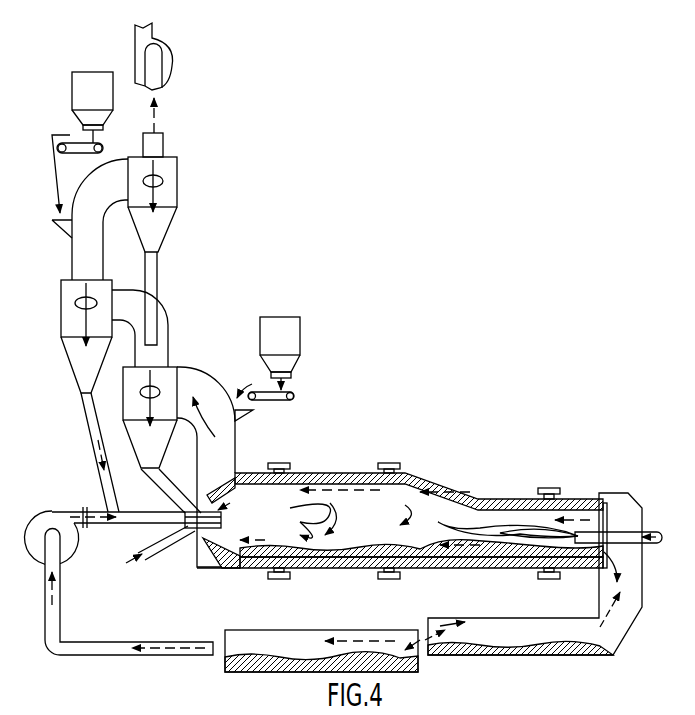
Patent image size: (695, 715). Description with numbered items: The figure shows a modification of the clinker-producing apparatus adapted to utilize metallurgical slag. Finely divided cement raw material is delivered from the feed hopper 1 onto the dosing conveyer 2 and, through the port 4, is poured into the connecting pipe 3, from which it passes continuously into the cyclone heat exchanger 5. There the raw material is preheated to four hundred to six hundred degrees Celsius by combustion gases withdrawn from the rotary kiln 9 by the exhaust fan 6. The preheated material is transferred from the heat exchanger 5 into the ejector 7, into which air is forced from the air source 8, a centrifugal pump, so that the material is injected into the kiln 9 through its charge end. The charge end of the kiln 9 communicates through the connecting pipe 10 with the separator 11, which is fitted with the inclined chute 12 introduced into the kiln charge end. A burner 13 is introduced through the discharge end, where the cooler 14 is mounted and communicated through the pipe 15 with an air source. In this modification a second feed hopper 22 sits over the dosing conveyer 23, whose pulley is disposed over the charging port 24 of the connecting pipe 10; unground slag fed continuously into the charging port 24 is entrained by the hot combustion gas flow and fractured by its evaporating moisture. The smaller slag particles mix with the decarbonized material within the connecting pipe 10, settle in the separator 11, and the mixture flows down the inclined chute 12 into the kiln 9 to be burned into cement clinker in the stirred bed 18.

The feed hopper 1 is at (100, 73).
The dosing conveyer 2 is at (104, 147).
The connecting pipe 3 is at (81, 187).
The port 4 is at (52, 220).
The cyclone heat exchanger 5 is at (180, 168).
The exhaust fan 6 is at (168, 53).
The ejector 7 is at (121, 524).
The air source 8 is at (51, 516).
The rotary kiln 9 is at (305, 480).
The connecting pipe 10 is at (209, 377).
The separator 11 is at (170, 368).
The inclined chute 12 is at (162, 492).
The burner 13 is at (611, 531).
The cooler 14 is at (267, 653).
The pipe 15 is at (115, 650).
The stirred bed 18 is at (421, 569).
The feed hopper 22 is at (299, 335).
The dosing conveyer 23 is at (285, 403).
The charging port 24 is at (244, 422).